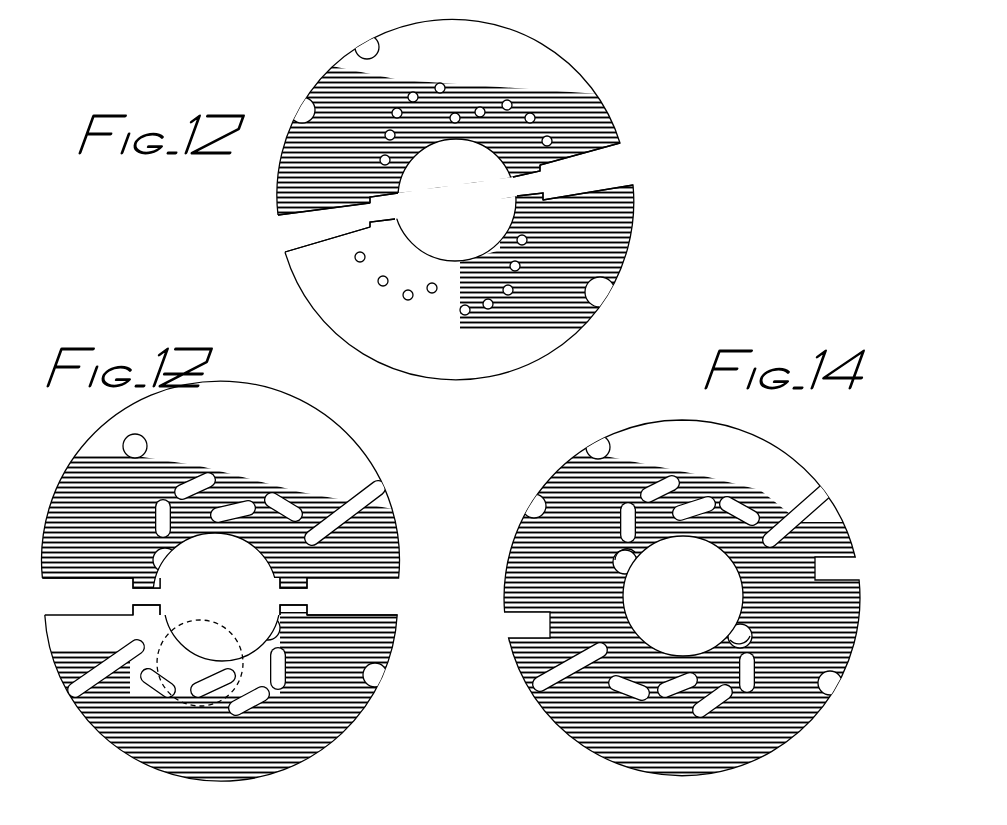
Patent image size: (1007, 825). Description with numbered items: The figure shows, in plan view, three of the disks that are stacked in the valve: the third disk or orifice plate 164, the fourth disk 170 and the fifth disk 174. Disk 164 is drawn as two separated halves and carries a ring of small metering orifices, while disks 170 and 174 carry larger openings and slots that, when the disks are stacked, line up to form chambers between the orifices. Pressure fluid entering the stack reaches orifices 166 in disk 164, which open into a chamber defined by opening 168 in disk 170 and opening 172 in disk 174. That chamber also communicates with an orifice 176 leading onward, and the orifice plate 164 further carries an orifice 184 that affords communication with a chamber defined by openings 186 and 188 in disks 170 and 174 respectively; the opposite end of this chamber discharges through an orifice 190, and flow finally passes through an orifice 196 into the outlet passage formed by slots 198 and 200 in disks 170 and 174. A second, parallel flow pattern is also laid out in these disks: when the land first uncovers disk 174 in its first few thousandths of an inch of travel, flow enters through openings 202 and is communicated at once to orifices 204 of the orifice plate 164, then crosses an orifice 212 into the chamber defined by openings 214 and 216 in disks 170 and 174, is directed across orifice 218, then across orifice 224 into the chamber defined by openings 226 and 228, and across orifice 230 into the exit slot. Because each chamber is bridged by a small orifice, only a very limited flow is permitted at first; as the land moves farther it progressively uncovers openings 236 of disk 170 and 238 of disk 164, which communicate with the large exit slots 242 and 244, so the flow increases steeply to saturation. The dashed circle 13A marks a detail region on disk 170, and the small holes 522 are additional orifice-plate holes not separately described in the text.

In FIG. 12, the disk 164 is at (553, 42).
In FIG. 12, the orifices 166 is at (468, 141).
In FIG. 13, the disk 170 is at (338, 452).
In FIG. 13, the opening 168 is at (235, 524).
In FIG. 14, the disk 174 is at (750, 430).
In FIG. 14, the opening 172 is at (712, 522).
In FIG. 12, the orifice 176 is at (480, 108).
In FIG. 12, the orifice 184 is at (507, 101).
In FIG. 13, the opening 186 is at (285, 496).
In FIG. 14, the opening 188 is at (745, 500).
In FIG. 12, the orifice 190 is at (533, 115).
In FIG. 12, the orifice 196 is at (551, 139).
In FIG. 13, the slot 198 is at (355, 502).
In FIG. 14, the slot 200 is at (805, 500).
In FIG. 14, the openings 202 is at (628, 572).
In FIG. 12, the orifices 204 is at (360, 155).
In FIG. 12, the orifice 212 is at (318, 118).
In FIG. 13, the opening 214 is at (140, 452).
In FIG. 14, the opening 216 is at (628, 504).
In FIG. 12, the orifice 218 is at (395, 110).
In FIG. 12, the orifice 224 is at (411, 95).
In FIG. 13, the opening 226 is at (198, 480).
In FIG. 14, the opening 228 is at (668, 478).
In FIG. 12, the orifice 230 is at (455, 114).
In FIG. 13, the openings 236 is at (144, 586).
In FIG. 12, the openings 238 is at (540, 192).
In FIG. 13, the exit slot 242 is at (105, 580).
In FIG. 12, the exit slot 244 is at (580, 192).
In FIG. 13, the detail circle 13A is at (192, 635).
In FIG. 12, the holes 522 is at (453, 200).